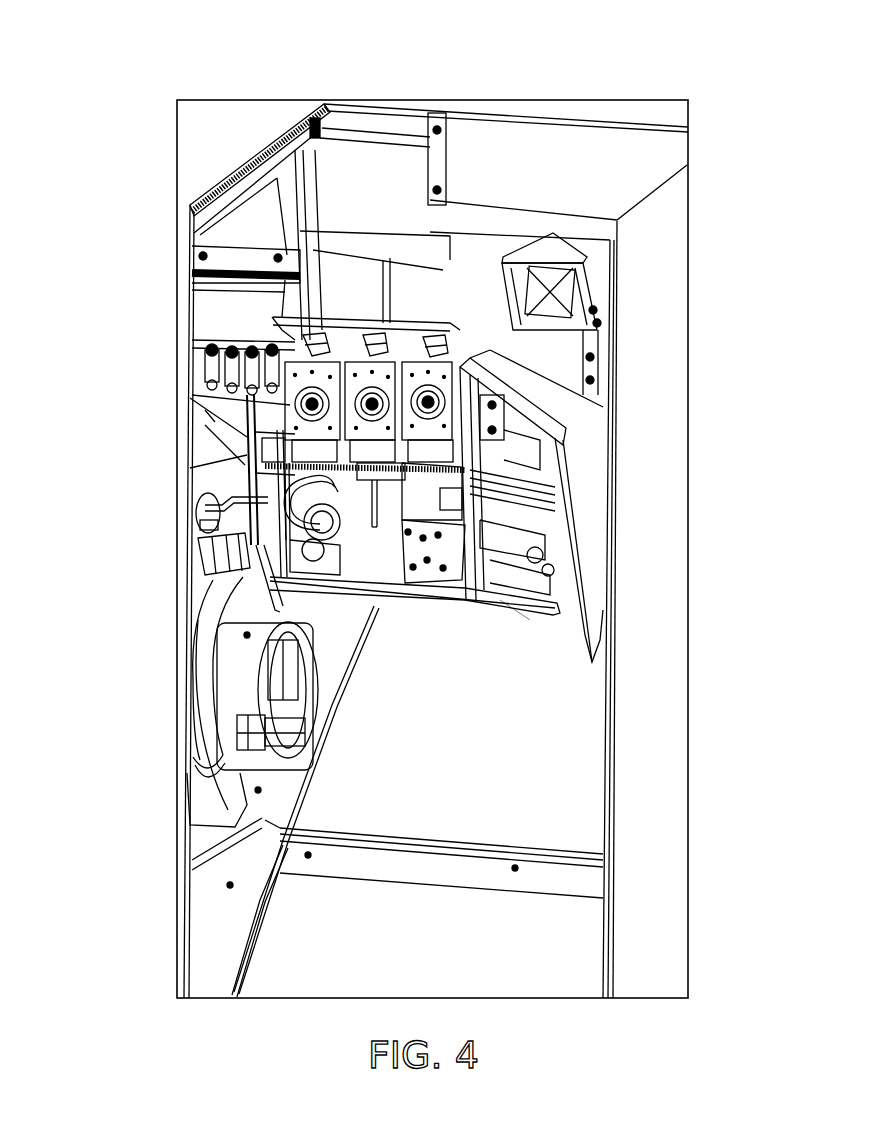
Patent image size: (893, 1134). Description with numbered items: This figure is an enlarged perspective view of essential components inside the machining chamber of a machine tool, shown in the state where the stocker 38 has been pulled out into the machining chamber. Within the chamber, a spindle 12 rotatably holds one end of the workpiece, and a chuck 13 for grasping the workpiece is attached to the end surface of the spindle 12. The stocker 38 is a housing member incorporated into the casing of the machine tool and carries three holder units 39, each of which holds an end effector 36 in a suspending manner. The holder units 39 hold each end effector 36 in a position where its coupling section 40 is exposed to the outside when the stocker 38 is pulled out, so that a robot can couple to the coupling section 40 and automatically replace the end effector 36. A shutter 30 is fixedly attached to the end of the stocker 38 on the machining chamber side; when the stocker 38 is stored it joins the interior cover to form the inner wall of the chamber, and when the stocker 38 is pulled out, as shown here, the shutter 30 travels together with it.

The spindle 12 is at (230, 703).
The chuck 13 is at (318, 737).
The shutter 30 is at (593, 537).
The end effector 36 is at (255, 465).
The stocker 38 is at (522, 625).
The holder unit 39 is at (312, 335).
The coupling section 40 is at (503, 463).